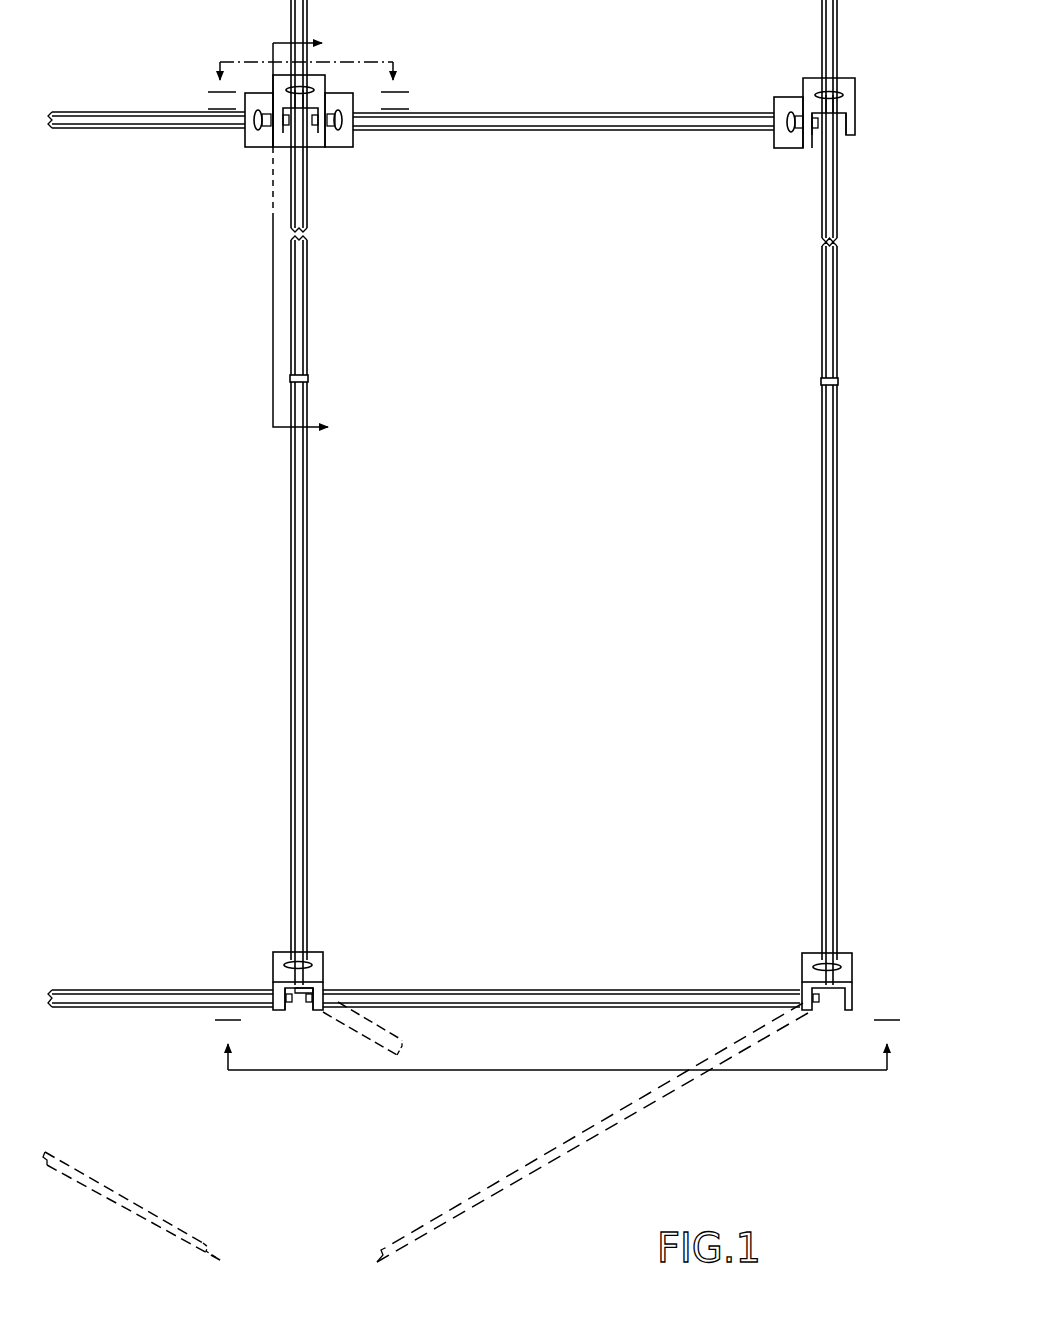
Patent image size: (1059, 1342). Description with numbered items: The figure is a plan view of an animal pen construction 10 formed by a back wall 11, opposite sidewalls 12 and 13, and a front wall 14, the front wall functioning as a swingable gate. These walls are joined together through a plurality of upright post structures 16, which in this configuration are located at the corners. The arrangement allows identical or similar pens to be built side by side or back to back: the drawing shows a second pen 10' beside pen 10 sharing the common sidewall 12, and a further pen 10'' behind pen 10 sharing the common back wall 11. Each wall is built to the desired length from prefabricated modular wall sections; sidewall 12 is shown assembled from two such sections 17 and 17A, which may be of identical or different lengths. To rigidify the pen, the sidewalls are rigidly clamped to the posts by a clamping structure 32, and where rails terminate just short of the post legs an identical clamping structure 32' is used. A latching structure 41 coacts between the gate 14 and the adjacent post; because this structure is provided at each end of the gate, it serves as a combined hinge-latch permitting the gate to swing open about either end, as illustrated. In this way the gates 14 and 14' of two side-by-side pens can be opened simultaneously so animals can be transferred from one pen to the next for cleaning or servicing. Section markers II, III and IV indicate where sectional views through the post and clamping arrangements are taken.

The animal pen construction 10 is at (547, 589).
The side-by-side pen 10' is at (110, 589).
The back-to-back pen 10'' is at (545, 34).
The back wall 11 is at (575, 134).
The sidewall 12 is at (313, 589).
The sidewall 13 is at (816, 582).
The front wall 14 is at (565, 1106).
The gate 14' is at (158, 1104).
The upright post structure 16 is at (315, 143).
The modular wall section 17 is at (298, 735).
The modular wall section 17A is at (298, 290).
The clamping structure 32 is at (539, 502).
The clamping structure 32' is at (378, 84).
The latching structure 41 is at (288, 1014).
The section line II is at (311, 236).
The section line III is at (308, 87).
The section line IV is at (557, 1045).